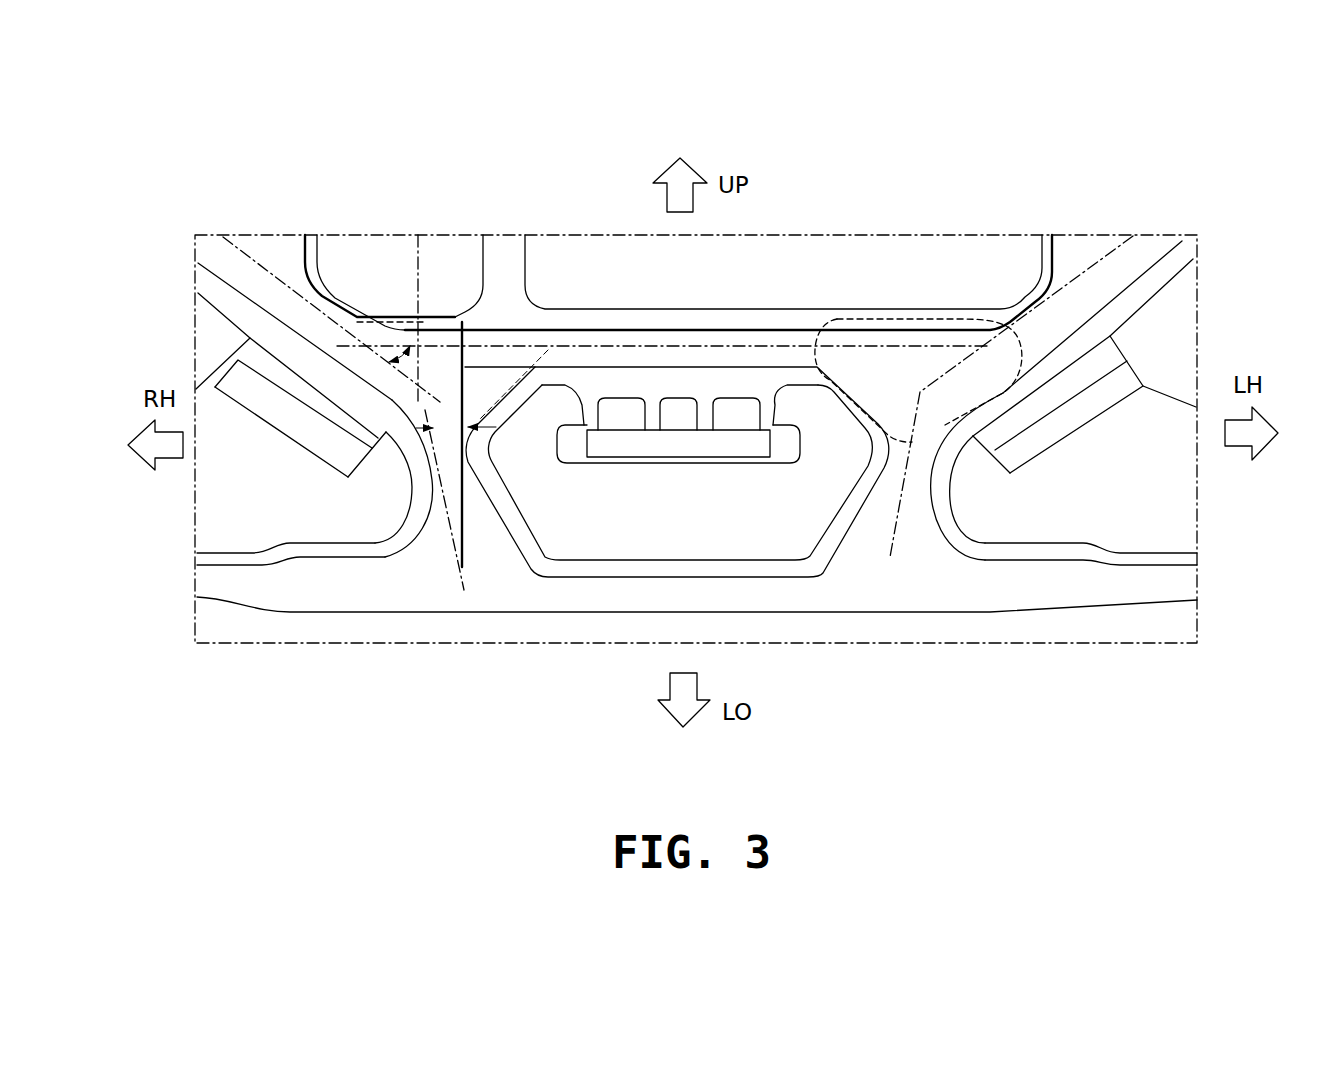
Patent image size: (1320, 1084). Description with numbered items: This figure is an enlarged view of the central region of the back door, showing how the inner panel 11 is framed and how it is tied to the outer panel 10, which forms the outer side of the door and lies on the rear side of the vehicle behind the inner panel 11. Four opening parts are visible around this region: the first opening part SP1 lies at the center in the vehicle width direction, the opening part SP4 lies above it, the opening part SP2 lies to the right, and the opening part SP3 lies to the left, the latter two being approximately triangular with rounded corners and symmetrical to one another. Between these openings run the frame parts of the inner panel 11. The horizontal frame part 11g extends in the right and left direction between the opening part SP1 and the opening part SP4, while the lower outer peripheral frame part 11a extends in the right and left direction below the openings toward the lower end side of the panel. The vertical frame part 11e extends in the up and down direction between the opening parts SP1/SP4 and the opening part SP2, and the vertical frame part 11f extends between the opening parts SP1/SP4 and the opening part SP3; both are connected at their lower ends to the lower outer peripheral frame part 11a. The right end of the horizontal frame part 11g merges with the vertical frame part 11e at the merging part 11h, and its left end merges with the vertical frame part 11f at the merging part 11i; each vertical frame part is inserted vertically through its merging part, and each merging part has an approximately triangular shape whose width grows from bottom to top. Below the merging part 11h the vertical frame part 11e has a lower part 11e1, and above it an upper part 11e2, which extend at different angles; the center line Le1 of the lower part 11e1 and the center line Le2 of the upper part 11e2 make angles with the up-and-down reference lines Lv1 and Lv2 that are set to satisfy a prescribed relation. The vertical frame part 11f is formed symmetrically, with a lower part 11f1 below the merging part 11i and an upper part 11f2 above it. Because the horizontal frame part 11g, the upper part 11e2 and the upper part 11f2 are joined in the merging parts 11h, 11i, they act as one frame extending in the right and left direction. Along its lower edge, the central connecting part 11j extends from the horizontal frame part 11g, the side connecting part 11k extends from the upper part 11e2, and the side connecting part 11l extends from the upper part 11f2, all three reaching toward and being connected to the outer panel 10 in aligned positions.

The outer panel 10 is at (217, 452).
The inner panel 11 is at (1153, 573).
The lower outer peripheral frame part 11a is at (757, 592).
The vertical frame part 11e is at (305, 497).
The lower part 11e1 is at (428, 484).
The upper part 11e2 is at (277, 321).
The vertical frame part 11f is at (1074, 534).
The lower part 11f1 is at (880, 517).
The upper part 11f2 is at (1075, 306).
The horizontal frame part 11g is at (603, 330).
The merging part 11h is at (436, 311).
The merging part 11i is at (873, 313).
The central connecting part 11j is at (610, 443).
The side connecting part 11k is at (291, 406).
The side connecting part 11l is at (1097, 400).
The opening part SP1 is at (617, 530).
The opening part SP2 is at (297, 497).
The opening part SP3 is at (1064, 508).
The opening part SP4 is at (787, 260).
The center line Le1 is at (448, 515).
The center line Le2 is at (298, 290).
The reference line Lv1 is at (468, 352).
The reference line Lv2 is at (413, 252).